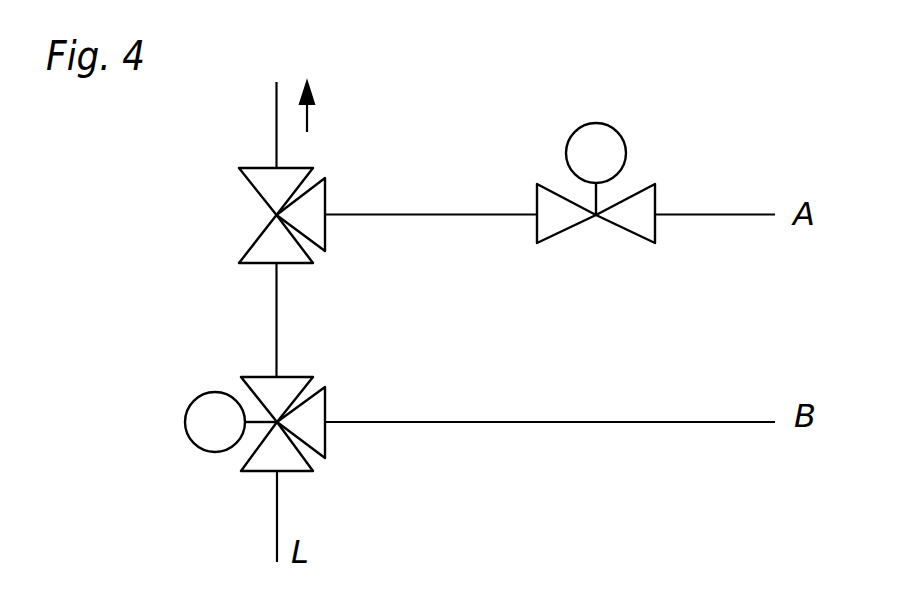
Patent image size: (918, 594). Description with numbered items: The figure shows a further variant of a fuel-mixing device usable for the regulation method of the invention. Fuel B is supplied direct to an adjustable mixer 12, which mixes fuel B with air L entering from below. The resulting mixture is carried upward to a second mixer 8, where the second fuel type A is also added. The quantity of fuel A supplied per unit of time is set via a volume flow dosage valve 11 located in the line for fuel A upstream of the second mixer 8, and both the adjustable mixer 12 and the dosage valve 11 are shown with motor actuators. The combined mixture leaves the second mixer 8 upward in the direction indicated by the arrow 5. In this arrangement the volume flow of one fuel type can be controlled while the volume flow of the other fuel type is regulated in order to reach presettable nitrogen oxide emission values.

The flow direction / outlet line 5 is at (316, 113).
The second mixer 8 is at (268, 192).
The volume flow dosage valve 11 is at (650, 220).
The adjustable mixer 12 is at (318, 407).